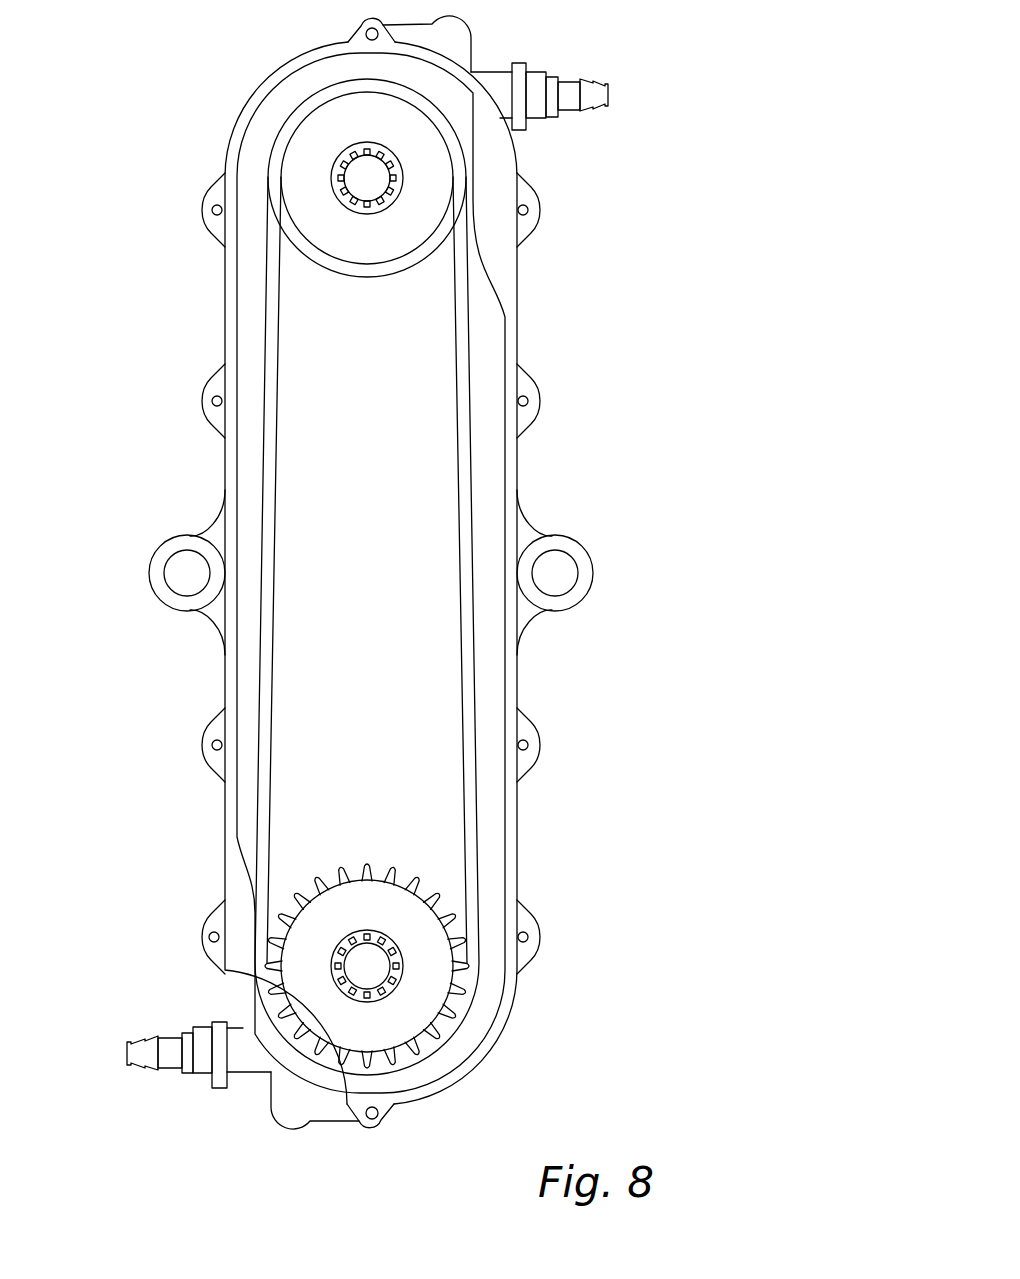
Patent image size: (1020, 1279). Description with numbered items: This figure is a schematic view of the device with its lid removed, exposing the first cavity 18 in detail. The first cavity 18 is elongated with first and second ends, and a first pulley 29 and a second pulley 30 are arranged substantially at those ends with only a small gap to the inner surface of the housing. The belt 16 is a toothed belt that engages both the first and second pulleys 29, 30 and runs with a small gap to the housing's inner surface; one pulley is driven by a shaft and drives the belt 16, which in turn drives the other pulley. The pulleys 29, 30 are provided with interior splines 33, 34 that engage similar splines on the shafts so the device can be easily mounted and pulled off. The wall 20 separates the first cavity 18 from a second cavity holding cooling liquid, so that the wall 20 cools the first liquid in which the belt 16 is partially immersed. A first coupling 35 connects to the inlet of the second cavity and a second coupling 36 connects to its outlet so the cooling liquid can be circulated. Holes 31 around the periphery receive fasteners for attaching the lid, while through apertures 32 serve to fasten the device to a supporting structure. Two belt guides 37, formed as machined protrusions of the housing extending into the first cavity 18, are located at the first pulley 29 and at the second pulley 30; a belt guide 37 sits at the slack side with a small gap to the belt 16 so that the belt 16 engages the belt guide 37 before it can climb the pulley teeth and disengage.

The belt 16 is at (463, 346).
The first cavity 18 is at (371, 572).
The wall 20 is at (497, 688).
The first pulley 29 is at (300, 150).
The second pulley 30 is at (422, 928).
The holes 31 is at (213, 402).
The through apertures 32 is at (175, 572).
The interior splines 33 is at (343, 200).
The interior splines 34 is at (398, 975).
The first coupling 35 is at (609, 89).
The second coupling 36 is at (127, 1051).
The belt guide 37 is at (478, 236).